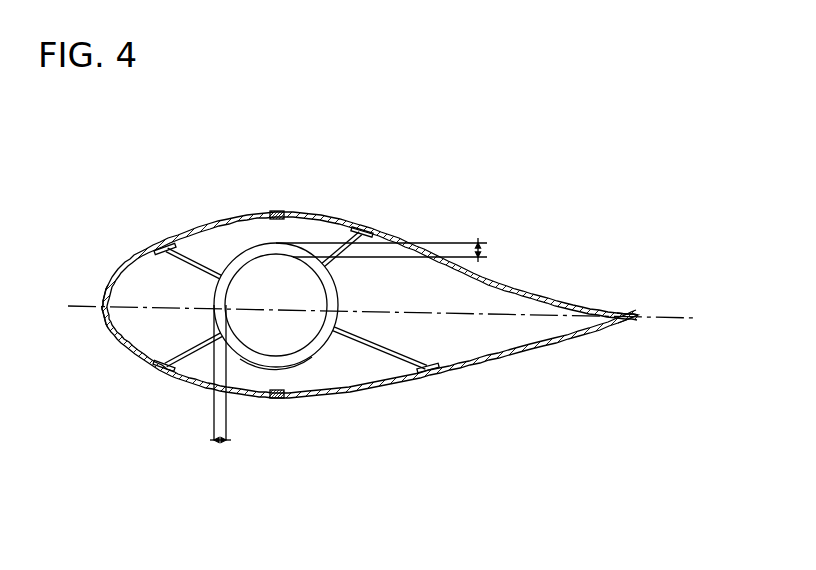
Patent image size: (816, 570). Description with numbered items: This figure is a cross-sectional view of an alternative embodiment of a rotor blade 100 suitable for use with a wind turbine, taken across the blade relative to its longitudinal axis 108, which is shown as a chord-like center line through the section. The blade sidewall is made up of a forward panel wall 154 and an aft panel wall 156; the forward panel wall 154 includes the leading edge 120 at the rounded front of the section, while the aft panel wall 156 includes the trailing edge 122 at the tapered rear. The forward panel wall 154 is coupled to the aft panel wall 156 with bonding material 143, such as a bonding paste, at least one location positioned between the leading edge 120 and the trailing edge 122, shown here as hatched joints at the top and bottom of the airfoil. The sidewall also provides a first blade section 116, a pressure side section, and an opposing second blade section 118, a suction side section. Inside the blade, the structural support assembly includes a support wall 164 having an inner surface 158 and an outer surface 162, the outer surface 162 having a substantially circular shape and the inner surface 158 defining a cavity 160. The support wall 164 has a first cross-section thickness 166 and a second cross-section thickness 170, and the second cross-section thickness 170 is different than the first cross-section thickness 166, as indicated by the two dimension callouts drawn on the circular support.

The rotor blade 100 is at (496, 152).
The longitudinal axis 108 is at (648, 318).
The first blade section 116 is at (275, 165).
The second blade section 118 is at (394, 420).
The leading edge 120 is at (97, 311).
The trailing edge 122 is at (637, 314).
The bonding material 143 is at (284, 213).
The forward panel wall 154 is at (120, 275).
The aft panel wall 156 is at (505, 291).
The inner surface 158 is at (258, 348).
The cavity 160 is at (296, 298).
The outer surface 162 is at (246, 250).
The support wall 164 is at (310, 346).
The first cross-section thickness 166 is at (478, 250).
The second cross-section thickness 170 is at (220, 443).